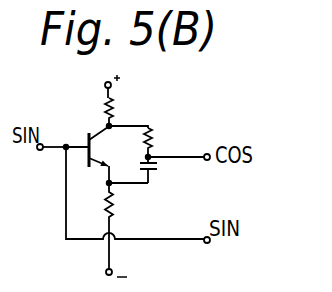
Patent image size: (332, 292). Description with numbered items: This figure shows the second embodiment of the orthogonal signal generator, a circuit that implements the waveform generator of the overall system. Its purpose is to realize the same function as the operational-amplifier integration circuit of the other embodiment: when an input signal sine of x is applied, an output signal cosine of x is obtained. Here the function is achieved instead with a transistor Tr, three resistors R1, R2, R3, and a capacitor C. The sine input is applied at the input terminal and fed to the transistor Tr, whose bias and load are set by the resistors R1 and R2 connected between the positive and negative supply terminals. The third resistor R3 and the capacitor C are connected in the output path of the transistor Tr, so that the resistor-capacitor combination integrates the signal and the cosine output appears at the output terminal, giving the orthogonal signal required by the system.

The transistor Tr is at (87, 135).
The resistor R1 is at (113, 107).
The resistor R2 is at (113, 210).
The resistor R3 is at (152, 140).
The capacitor C is at (158, 168).